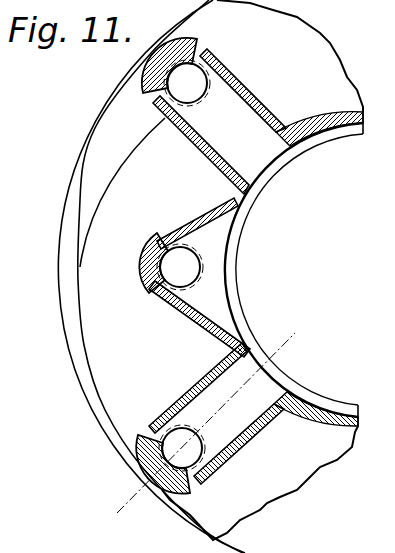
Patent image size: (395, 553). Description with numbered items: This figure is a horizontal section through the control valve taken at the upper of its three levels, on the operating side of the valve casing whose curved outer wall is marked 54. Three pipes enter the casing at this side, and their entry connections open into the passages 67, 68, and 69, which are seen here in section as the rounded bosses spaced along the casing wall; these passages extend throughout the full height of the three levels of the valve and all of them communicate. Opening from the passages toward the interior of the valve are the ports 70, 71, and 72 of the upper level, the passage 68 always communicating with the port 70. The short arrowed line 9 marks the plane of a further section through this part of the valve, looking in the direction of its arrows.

The rim 54 is at (335, 113).
The port 72 is at (262, 158).
The port 71 is at (215, 292).
The port 70 is at (262, 382).
The passage 69 is at (178, 93).
The passage 67 is at (173, 270).
The passage 68 is at (177, 443).
The section line 9- 9 is at (293, 353).